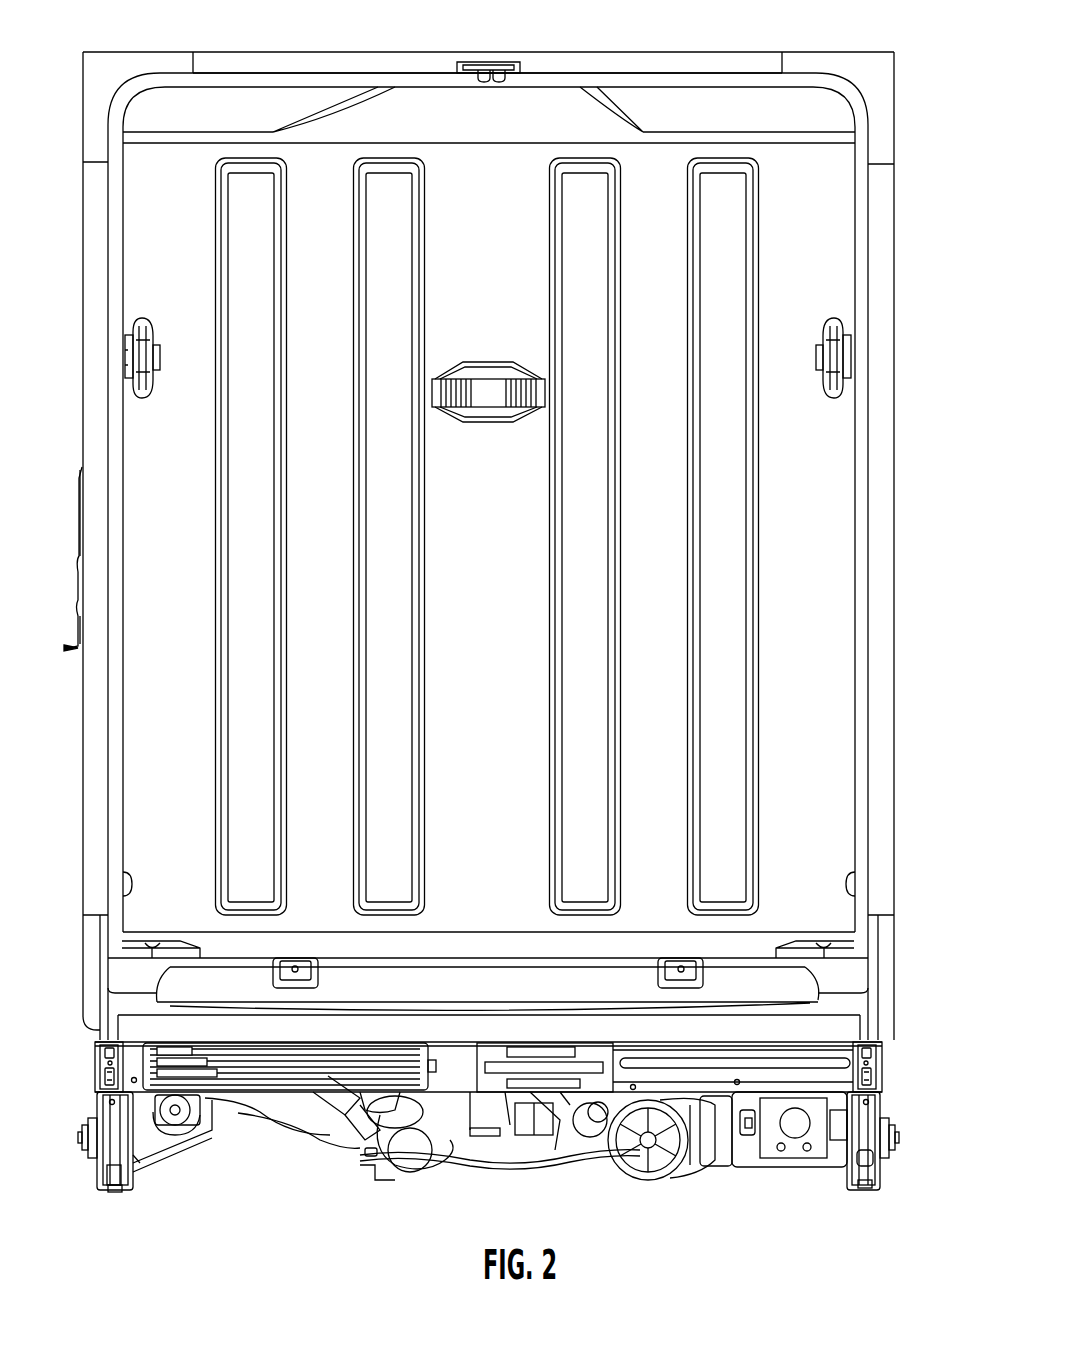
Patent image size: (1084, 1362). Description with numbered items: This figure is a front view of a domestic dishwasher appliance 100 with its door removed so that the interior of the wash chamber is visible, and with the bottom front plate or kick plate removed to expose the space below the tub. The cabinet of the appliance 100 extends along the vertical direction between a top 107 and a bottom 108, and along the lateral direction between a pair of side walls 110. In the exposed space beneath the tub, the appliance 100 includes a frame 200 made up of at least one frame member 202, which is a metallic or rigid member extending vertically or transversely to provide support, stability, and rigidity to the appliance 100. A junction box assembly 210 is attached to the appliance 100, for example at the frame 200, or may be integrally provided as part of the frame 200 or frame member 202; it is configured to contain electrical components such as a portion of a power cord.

The dishwasher appliance 100 is at (82, 435).
The top 107 is at (757, 60).
The side walls 110 is at (895, 466).
The frame 200 is at (96, 1103).
The frame member 202 is at (877, 1107).
The bottom 108 is at (113, 1190).
The junction box assembly 210 is at (780, 1173).